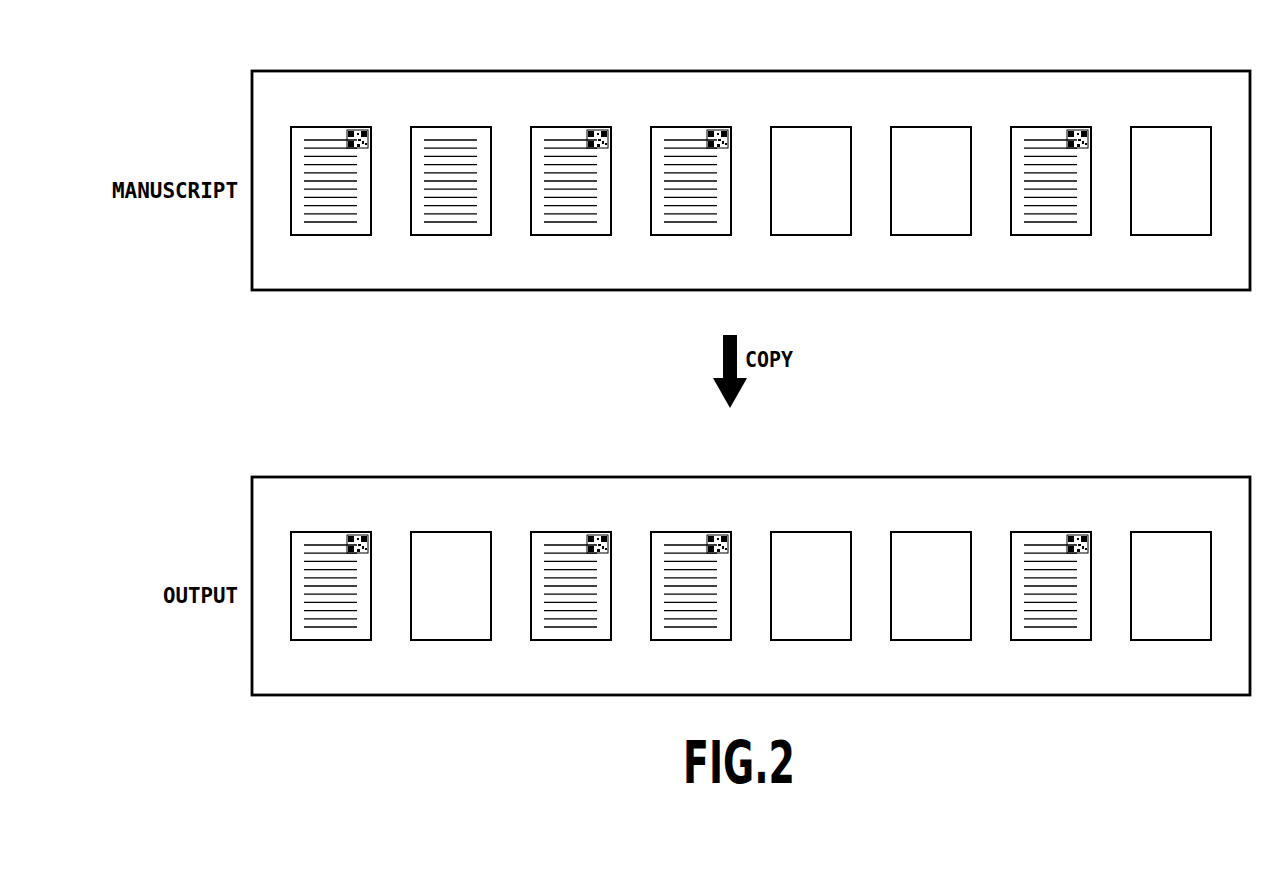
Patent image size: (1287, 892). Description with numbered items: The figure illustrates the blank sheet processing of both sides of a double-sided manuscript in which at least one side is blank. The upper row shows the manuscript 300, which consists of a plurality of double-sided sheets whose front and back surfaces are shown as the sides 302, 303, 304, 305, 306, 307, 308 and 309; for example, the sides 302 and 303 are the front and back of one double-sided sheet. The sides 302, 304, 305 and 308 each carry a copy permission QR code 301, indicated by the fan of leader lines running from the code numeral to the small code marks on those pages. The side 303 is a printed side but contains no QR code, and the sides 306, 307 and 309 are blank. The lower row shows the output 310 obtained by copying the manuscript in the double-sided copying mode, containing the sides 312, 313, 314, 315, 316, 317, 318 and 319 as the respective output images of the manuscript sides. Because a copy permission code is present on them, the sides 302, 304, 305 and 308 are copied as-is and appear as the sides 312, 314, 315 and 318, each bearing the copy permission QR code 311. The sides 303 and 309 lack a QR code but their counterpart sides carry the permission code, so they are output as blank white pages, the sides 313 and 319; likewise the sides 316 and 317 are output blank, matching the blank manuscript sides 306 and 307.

The manuscript 300 is at (1128, 71).
The copy permission QR code 301 is at (360, 128).
The side 302 is at (334, 235).
The side 303 is at (454, 235).
The side 304 is at (574, 235).
The side 305 is at (694, 235).
The side 306 is at (814, 235).
The side 307 is at (934, 235).
The side 308 is at (1054, 235).
The side 309 is at (1174, 235).
The output 310 is at (751, 549).
The copy permission QR code 311 is at (717, 478).
The side 312 is at (333, 588).
The side 313 is at (453, 588).
The side 314 is at (573, 588).
The side 315 is at (693, 588).
The side 316 is at (813, 588).
The side 317 is at (933, 588).
The side 318 is at (1053, 588).
The side 319 is at (1173, 588).